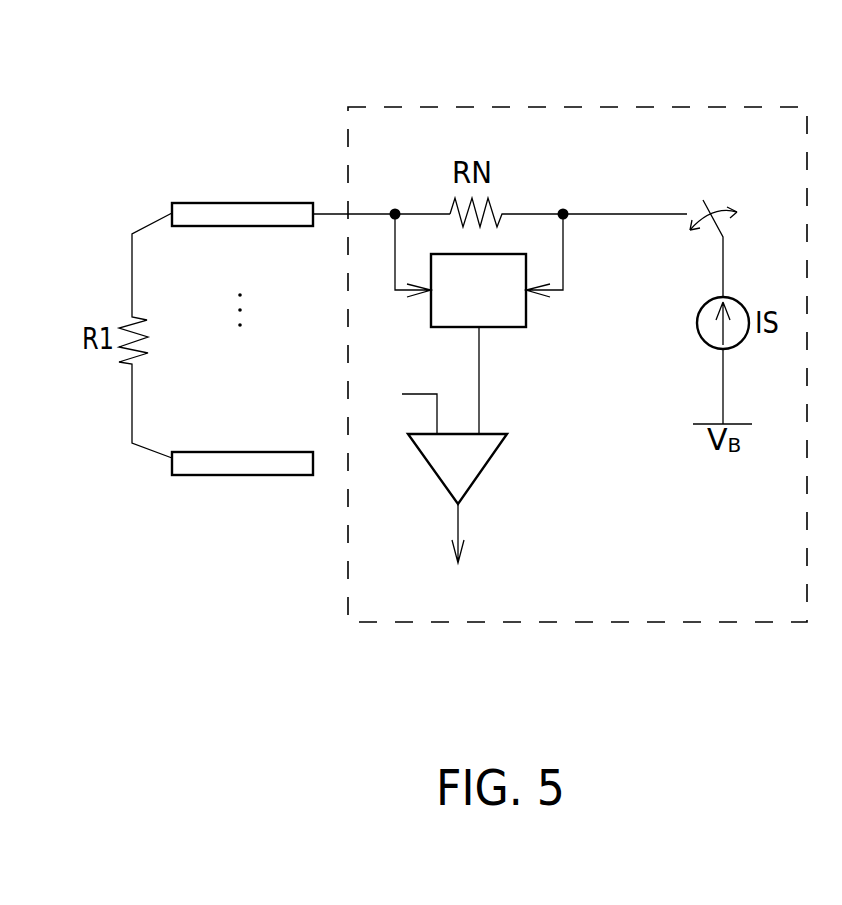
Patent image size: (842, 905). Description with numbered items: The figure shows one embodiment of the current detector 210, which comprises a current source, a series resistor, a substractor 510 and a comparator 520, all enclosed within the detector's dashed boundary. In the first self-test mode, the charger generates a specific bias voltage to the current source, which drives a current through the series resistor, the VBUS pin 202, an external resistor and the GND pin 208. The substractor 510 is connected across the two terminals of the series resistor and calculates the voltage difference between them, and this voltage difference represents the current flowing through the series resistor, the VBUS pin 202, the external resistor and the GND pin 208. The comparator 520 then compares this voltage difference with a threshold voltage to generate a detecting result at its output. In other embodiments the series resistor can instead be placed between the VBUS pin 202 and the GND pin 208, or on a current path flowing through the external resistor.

The VBUS pin 202 is at (243, 203).
The GND pin 208 is at (245, 452).
The current detector 210 is at (718, 107).
The substractor 510 is at (512, 328).
The comparator 520 is at (485, 472).